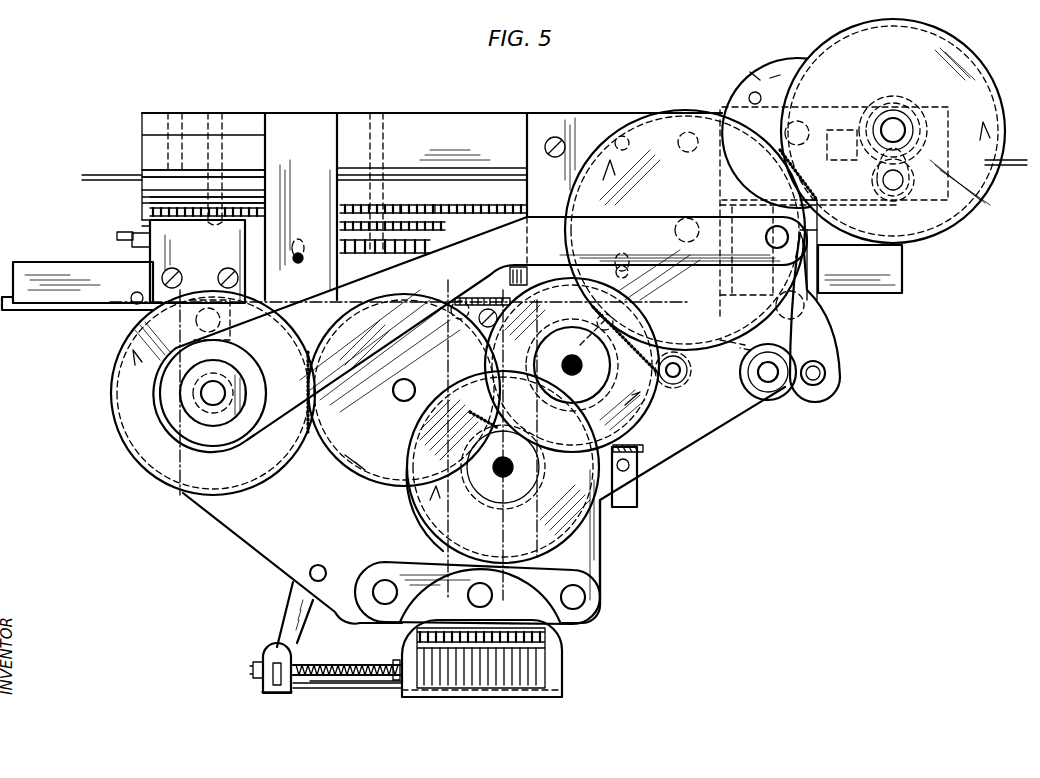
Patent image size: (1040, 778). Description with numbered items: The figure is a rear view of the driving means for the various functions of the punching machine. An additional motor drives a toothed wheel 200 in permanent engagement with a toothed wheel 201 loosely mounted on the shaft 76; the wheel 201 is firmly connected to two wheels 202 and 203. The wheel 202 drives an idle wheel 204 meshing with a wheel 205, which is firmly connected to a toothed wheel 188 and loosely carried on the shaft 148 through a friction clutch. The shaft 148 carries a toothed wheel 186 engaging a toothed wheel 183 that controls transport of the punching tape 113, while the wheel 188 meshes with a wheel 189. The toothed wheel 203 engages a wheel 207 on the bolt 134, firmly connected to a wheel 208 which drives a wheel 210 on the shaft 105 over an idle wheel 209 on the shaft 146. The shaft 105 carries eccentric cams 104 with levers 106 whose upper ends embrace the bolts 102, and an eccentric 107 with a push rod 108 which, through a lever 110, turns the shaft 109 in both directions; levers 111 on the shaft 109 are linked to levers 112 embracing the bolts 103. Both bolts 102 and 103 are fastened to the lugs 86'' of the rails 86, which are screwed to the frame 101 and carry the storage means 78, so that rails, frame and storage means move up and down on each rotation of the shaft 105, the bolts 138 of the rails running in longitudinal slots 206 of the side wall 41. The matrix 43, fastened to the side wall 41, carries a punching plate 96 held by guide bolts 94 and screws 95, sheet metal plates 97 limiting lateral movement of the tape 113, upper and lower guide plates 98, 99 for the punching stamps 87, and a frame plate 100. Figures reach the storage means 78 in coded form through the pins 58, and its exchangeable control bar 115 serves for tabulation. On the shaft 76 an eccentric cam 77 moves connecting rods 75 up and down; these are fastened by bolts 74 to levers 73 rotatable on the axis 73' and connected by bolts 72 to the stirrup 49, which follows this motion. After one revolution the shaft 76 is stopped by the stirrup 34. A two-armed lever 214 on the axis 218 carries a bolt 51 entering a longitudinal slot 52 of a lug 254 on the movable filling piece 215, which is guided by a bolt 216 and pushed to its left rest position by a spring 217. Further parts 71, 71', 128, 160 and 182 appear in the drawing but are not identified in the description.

The stirrup 34 is at (645, 448).
The side wall 41 is at (298, 125).
The matrix 43 is at (445, 127).
The stirrup 49 is at (555, 652).
The bolt 51 is at (270, 655).
The longitudinal slot 52 is at (268, 683).
The pins 58 is at (398, 215).
The pawl block 71 is at (489, 297).
The link 71' is at (477, 578).
The bolts 72 is at (494, 597).
The levers 73 is at (472, 516).
The axis 73' is at (383, 568).
The bolts 74 is at (587, 597).
The connecting rods 75 is at (602, 545).
The shaft 76 is at (578, 352).
The eccentric cam 77 is at (656, 370).
The storage means 78 is at (132, 242).
The rails 86 is at (471, 268).
The lugs 86'' is at (504, 315).
The punching stamps 87 is at (432, 215).
The guide bolts 94 is at (212, 118).
The screws 95 is at (170, 135).
The punching plate 96 is at (150, 172).
The sheet metal plates 97 is at (156, 178).
The upper guide plate 98 is at (145, 190).
The lower guide plate 99 is at (150, 204).
The frame plate 100 is at (175, 205).
The frame 101 is at (148, 224).
The through-going bolts 102 is at (188, 262).
The through-going bolts 103 is at (822, 320).
The eccentric cams 104 is at (170, 435).
The shaft 105 is at (200, 393).
The levers 106 is at (240, 360).
The eccentric 107 is at (248, 403).
The push rod 108 is at (542, 222).
The shaft 109 is at (768, 395).
The lever 110 is at (742, 352).
The levers 111 is at (800, 395).
The levers 112 is at (826, 350).
The punching tape 113 is at (110, 177).
The control bar 115 is at (66, 310).
The bracket 128 is at (638, 475).
The bolt 134 is at (515, 467).
The bolts 138 is at (295, 262).
The shaft 146 is at (404, 380).
The shaft 148 is at (905, 125).
The stop 160 is at (115, 232).
The pin 182 is at (750, 96).
The toothed wheel 183 is at (768, 68).
The toothed wheel 186 is at (905, 105).
The toothed wheel 188 is at (891, 98).
The wheel 189 is at (893, 202).
The toothed wheel 200 is at (682, 382).
The toothed wheel 201 is at (645, 415).
The wheel 202 is at (565, 300).
The toothed wheel 203 is at (608, 318).
The idle wheel 204 is at (662, 118).
The wheel 205 is at (950, 240).
The longitudinal slots 206 is at (300, 250).
The wheel 207 is at (412, 497).
The wheel 208 is at (485, 497).
The idle wheel 209 is at (338, 452).
The wheel 210 is at (145, 475).
The two-armed lever 214 is at (290, 600).
The filling piece 215 is at (348, 689).
The bolt 216 is at (320, 664).
The spring 217 is at (392, 662).
The axis 218 is at (318, 565).
The lug 254 is at (283, 694).